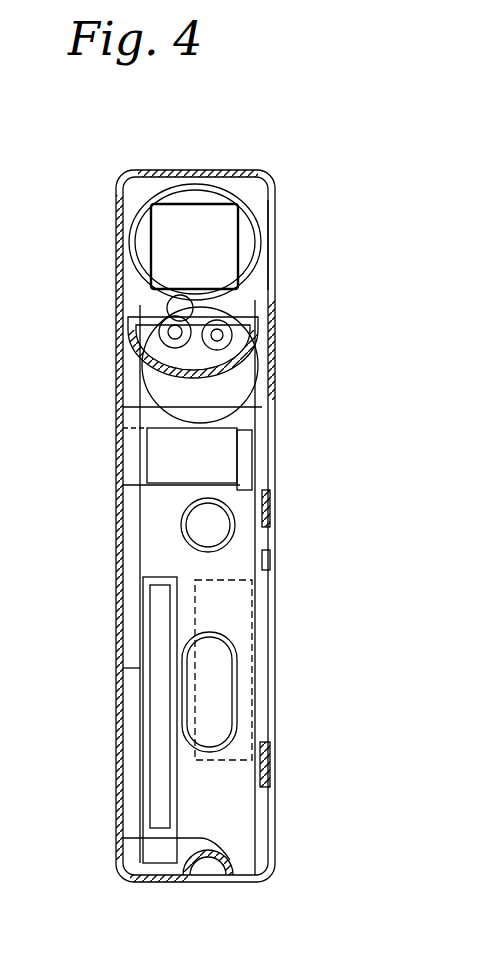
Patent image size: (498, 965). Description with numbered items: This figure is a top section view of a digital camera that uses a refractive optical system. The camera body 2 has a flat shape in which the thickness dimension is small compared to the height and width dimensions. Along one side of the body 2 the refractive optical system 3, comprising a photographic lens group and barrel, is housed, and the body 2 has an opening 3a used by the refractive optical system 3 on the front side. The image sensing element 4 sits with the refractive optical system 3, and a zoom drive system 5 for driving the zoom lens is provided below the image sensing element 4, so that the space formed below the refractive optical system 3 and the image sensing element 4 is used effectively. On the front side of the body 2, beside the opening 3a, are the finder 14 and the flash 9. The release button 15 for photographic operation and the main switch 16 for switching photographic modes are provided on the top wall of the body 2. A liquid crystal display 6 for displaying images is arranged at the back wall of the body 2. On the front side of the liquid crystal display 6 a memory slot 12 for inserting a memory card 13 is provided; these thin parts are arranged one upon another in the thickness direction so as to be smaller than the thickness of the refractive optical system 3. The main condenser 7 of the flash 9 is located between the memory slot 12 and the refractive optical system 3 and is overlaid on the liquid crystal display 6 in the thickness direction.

The body 2 is at (245, 170).
The refractive optical system 3 is at (187, 185).
The opening 3a is at (276, 235).
The image sensing element 4 is at (165, 237).
The zoom drive system 5 is at (108, 290).
The liquid crystal display 6 is at (130, 590).
The main condenser 7 is at (272, 405).
The flash 9 is at (248, 614).
The memory slot 12 is at (145, 718).
The memory card 13 is at (148, 773).
The finder 14 is at (120, 455).
The release button 15 is at (205, 688).
The main switch 16 is at (208, 527).